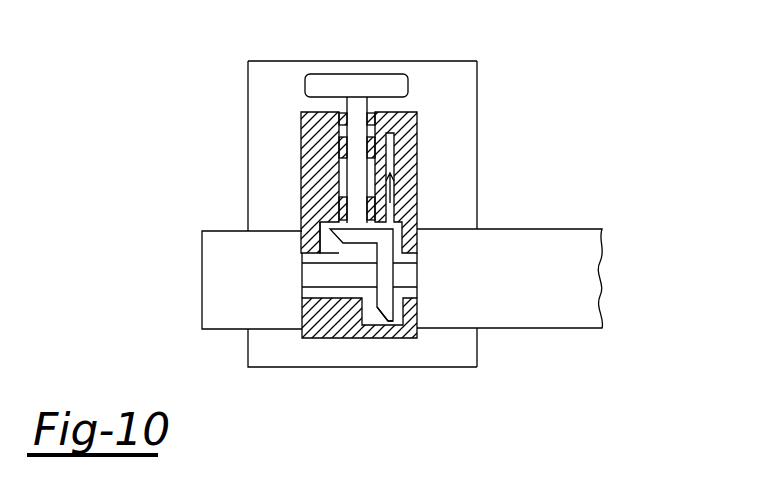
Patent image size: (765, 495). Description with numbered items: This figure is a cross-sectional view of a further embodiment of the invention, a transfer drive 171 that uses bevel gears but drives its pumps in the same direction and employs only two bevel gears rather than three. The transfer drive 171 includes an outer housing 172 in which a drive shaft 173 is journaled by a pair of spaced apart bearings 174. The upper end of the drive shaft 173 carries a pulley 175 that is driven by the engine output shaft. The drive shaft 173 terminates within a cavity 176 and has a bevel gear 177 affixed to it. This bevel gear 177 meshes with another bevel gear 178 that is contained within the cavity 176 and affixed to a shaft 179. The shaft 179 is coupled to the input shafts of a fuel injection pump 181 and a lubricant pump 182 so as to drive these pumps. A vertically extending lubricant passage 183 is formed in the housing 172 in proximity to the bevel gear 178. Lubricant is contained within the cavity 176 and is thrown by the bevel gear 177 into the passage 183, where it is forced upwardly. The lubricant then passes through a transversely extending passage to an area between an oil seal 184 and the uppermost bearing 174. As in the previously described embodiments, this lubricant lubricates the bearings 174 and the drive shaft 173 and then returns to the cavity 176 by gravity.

The transfer drive 171 is at (266, 91).
The outer housing 172 is at (415, 117).
The drive shaft 173 is at (371, 100).
The bearings 174 is at (418, 141).
The pulley 175 is at (331, 74).
The cavity 176 is at (338, 257).
The bevel gear 177 is at (338, 236).
The bevel gear 178 is at (388, 305).
The shaft 179 is at (312, 270).
The fuel injection pump 181 is at (598, 288).
The lubricant pump 182 is at (216, 268).
The lubricant passage 183 is at (390, 163).
The oil seal 184 is at (305, 113).